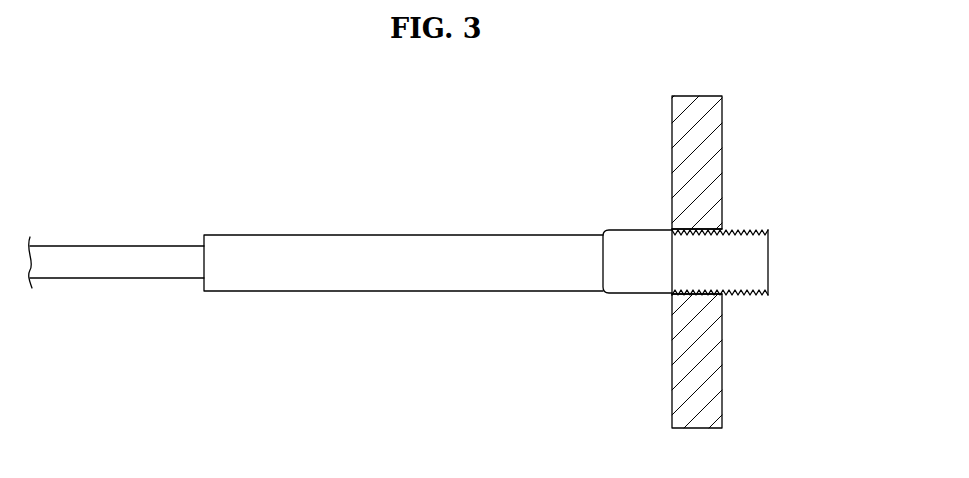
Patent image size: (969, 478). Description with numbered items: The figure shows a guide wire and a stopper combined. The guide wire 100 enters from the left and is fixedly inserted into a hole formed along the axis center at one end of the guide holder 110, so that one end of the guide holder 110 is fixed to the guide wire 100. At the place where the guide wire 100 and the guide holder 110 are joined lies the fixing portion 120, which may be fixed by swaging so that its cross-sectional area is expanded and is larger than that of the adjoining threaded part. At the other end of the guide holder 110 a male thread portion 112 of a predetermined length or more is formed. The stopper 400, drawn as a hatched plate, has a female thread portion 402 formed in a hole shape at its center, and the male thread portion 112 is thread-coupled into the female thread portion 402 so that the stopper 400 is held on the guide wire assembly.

The guide wire 100 is at (170, 263).
The guide holder 110 is at (427, 263).
The fixing portion 120 is at (640, 263).
The male thread portion 112 is at (733, 281).
The stopper 400 is at (692, 163).
The female thread portion 402 is at (703, 232).